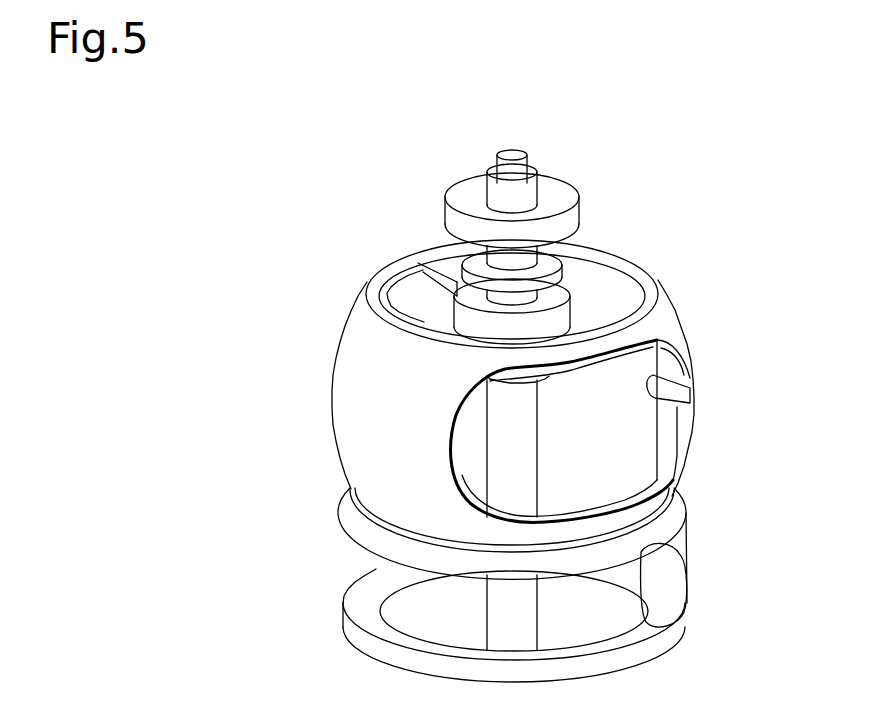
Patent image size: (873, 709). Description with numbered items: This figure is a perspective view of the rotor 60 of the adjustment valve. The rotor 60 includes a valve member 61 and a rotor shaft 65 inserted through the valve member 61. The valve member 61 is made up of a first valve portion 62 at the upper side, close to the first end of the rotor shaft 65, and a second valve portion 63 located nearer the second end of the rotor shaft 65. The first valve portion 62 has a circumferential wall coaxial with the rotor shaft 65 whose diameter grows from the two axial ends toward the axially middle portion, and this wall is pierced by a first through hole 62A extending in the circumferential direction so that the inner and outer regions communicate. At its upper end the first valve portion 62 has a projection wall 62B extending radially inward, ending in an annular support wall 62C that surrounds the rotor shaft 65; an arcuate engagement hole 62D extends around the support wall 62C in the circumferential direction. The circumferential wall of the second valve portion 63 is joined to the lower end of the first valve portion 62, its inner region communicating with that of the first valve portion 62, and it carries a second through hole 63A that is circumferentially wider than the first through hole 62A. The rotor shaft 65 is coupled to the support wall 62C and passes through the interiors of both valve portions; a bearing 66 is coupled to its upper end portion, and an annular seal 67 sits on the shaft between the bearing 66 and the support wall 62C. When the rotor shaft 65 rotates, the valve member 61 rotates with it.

The rotor 60 is at (218, 227).
The valve member 61 is at (646, 278).
The first valve portion 62 is at (334, 357).
The first through hole 62A is at (452, 455).
The projection wall 62B is at (443, 256).
The support wall 62C is at (552, 293).
The engagement hole 62D is at (404, 292).
The second valve portion 63 is at (692, 535).
The second through hole 63A is at (660, 614).
The rotor shaft 65 is at (513, 155).
The bearing 66 is at (470, 192).
The seal 67 is at (562, 253).